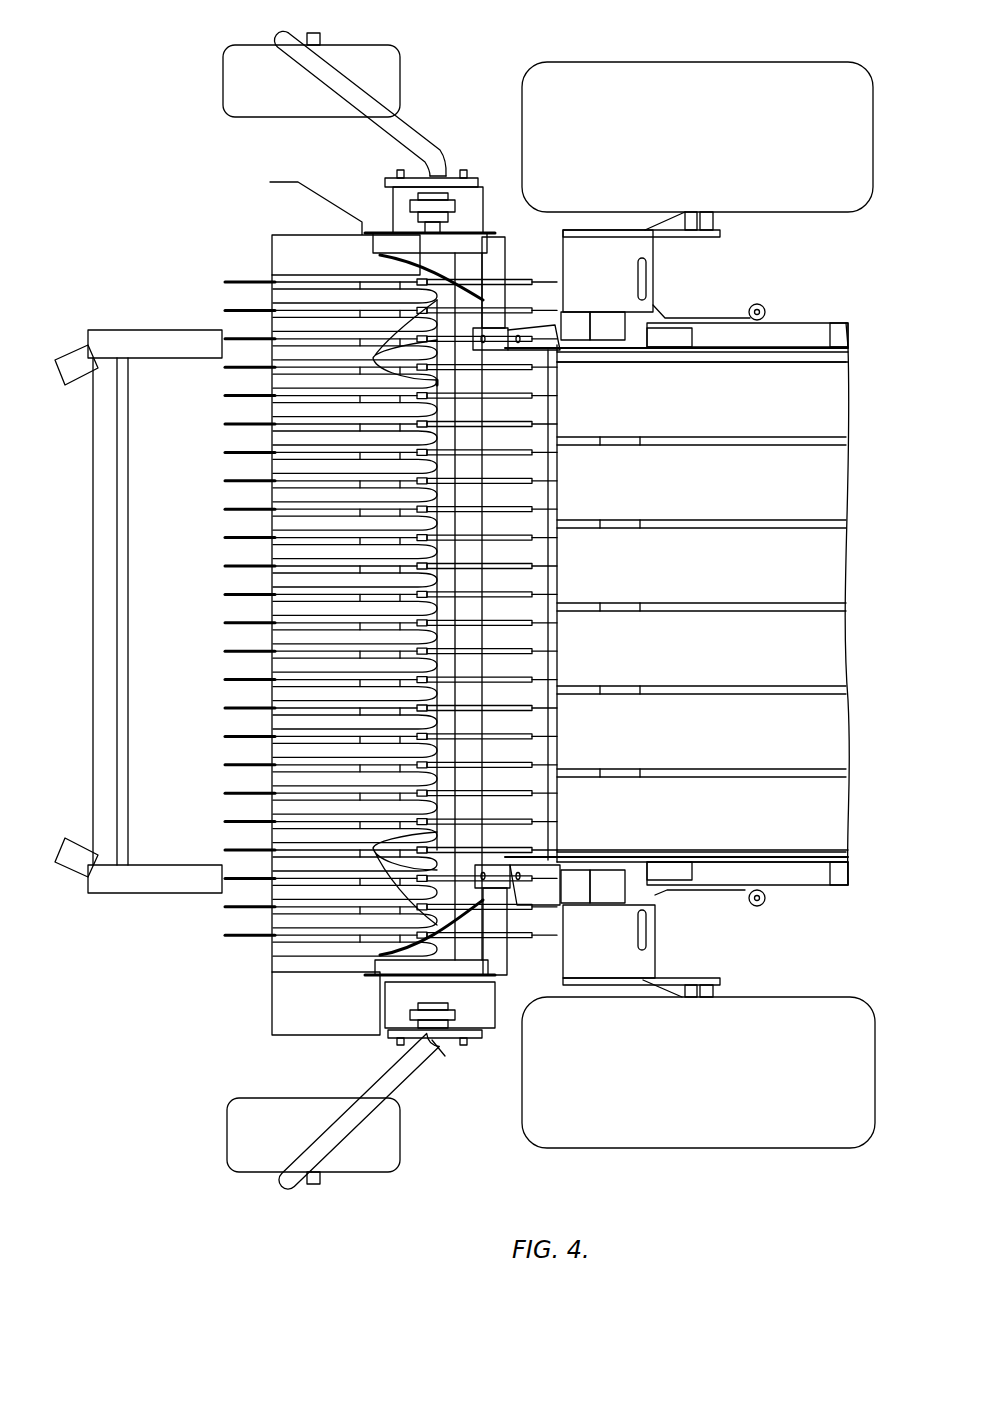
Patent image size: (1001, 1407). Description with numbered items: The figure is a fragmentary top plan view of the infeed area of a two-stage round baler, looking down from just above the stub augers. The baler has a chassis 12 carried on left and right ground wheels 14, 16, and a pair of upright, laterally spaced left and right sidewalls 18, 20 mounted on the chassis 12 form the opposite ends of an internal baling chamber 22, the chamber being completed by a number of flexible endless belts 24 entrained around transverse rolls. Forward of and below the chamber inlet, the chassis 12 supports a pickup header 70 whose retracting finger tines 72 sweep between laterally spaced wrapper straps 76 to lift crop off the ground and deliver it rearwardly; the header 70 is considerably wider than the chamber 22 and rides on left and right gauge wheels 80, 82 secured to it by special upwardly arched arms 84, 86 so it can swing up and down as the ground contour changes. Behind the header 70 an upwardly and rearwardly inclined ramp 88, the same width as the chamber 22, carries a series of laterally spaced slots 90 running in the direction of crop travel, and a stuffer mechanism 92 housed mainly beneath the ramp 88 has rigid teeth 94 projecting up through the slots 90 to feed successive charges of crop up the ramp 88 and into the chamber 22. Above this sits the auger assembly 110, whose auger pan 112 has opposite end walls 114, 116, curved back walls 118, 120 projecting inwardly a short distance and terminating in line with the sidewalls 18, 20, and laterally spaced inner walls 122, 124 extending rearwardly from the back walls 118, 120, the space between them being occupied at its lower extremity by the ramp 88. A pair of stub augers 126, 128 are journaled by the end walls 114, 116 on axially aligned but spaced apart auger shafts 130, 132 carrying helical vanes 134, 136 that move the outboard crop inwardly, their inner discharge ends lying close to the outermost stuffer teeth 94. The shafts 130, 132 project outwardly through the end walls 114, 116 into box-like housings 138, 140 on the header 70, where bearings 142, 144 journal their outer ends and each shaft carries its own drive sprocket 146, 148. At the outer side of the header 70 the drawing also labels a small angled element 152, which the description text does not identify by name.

The chassis 12 is at (660, 957).
The left ground wheel 14 is at (718, 1140).
The right ground wheel 16 is at (700, 72).
The left sidewall 18 is at (740, 860).
The right sidewall 20 is at (825, 340).
The baling chamber 22 is at (768, 360).
The belts 24 is at (830, 485).
The pickup header 70 is at (265, 1040).
The retracting finger tines 72 is at (240, 920).
The wrapper straps 76 is at (240, 905).
The left gauge wheel 80 is at (230, 1125).
The right gauge wheel 82 is at (225, 78).
The upwardly arched arm 84 is at (335, 1140).
The upwardly arched arm 86 is at (425, 75).
The ramp 88 is at (557, 578).
The slots 90 is at (530, 492).
The stuffer mechanism 92 is at (517, 722).
The rigid teeth 94 is at (535, 655).
The auger assembly 110 is at (513, 243).
The auger pan 112 is at (520, 930).
The end wall 114 is at (415, 1000).
The end wall 116 is at (385, 240).
The curved back wall 118 is at (475, 942).
The curved back wall 120 is at (495, 268).
The inner wall 122 is at (540, 850).
The inner wall 124 is at (545, 380).
The stub auger 126 is at (385, 950).
The stub auger 128 is at (410, 294).
The auger shaft 130 is at (460, 855).
The auger shaft 132 is at (433, 360).
The helical vane 134 is at (410, 850).
The helical vane 136 is at (420, 400).
The housing 138 is at (497, 1030).
The housing 140 is at (482, 195).
The bearing 142 is at (430, 1060).
The bearing 144 is at (435, 165).
The drive sprocket 146 is at (490, 1000).
The drive sprocket 148 is at (410, 210).
The frame tab 152 is at (73, 370).